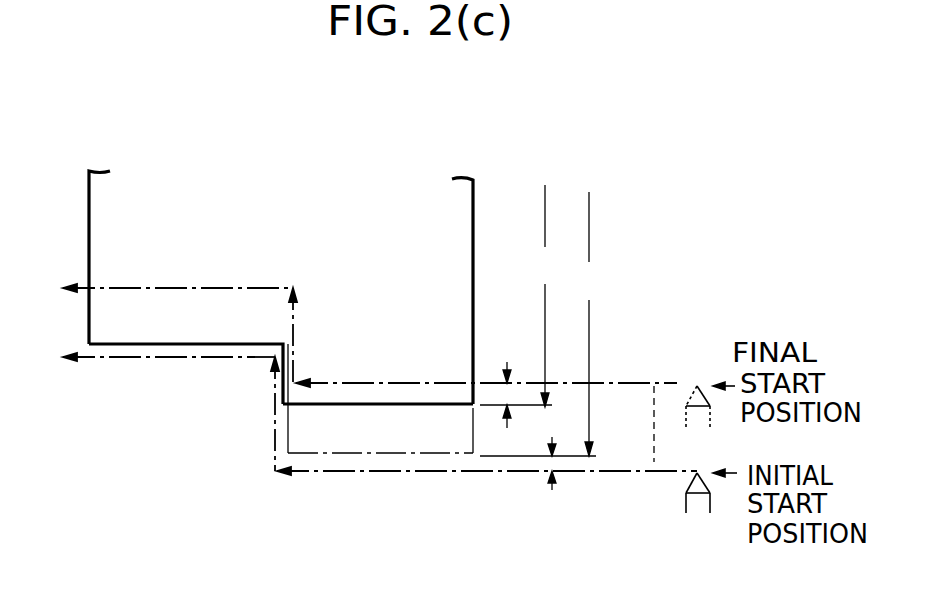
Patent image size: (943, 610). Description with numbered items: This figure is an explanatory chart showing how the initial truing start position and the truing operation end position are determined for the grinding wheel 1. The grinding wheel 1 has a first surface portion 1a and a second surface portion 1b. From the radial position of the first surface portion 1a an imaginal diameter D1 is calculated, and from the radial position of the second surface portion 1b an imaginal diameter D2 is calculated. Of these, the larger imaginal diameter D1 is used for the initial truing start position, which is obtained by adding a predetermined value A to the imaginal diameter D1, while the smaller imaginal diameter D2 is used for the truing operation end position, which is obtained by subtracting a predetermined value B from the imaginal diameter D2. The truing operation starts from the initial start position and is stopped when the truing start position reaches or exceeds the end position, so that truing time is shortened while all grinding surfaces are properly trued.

The grinding wheel 1 is at (253, 303).
The first surface portion 1a is at (145, 345).
The second surface portion 1b is at (372, 404).
The predetermined value A is at (553, 476).
The predetermined value B is at (507, 396).
The imaginal diameter D1 is at (593, 324).
The imaginal diameter D2 is at (550, 296).